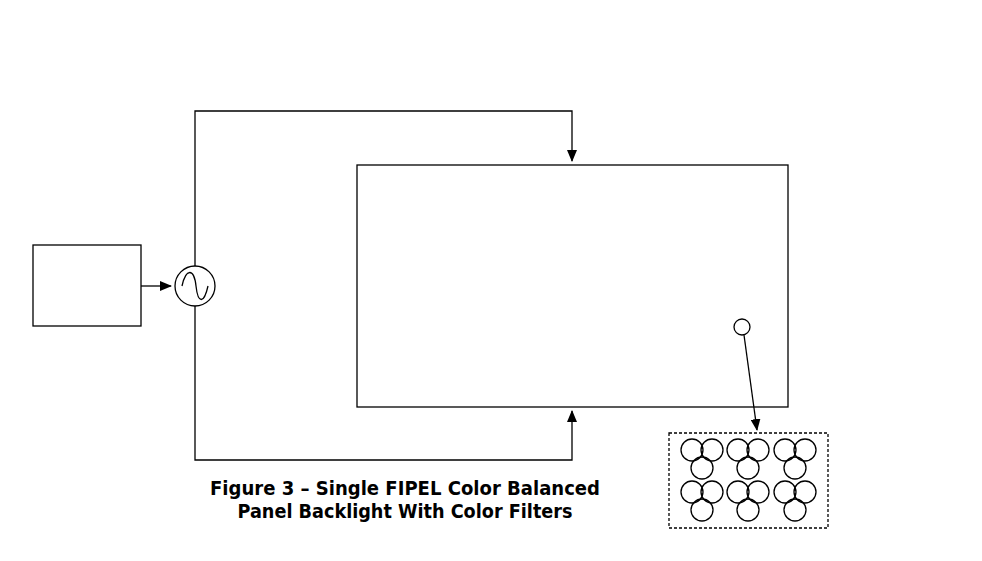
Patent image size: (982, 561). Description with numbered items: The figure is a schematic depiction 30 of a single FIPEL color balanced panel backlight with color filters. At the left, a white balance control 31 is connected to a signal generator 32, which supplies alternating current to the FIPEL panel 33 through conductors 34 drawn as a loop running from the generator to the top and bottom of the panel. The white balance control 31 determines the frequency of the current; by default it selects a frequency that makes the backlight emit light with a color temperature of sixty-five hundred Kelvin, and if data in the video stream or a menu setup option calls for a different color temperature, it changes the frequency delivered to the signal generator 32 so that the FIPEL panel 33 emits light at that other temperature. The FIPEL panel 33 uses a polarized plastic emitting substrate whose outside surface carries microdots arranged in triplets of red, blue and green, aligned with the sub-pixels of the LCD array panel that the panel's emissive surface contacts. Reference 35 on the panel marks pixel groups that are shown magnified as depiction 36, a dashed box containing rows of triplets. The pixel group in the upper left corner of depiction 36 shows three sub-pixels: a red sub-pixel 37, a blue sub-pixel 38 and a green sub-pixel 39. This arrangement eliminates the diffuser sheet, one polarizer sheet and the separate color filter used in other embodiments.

The depiction 30 is at (195, 52).
The white balance control 31 is at (86, 242).
The signal generator 32 is at (220, 285).
The FIPEL panel 33 is at (354, 285).
The conductors 34 is at (358, 107).
The pixel groups reference 35 is at (743, 315).
The magnified pixel group depiction 36 is at (832, 446).
The red sub-pixel 37 is at (679, 452).
The blue sub-pixel 38 is at (712, 436).
The green sub-pixel 39 is at (689, 468).